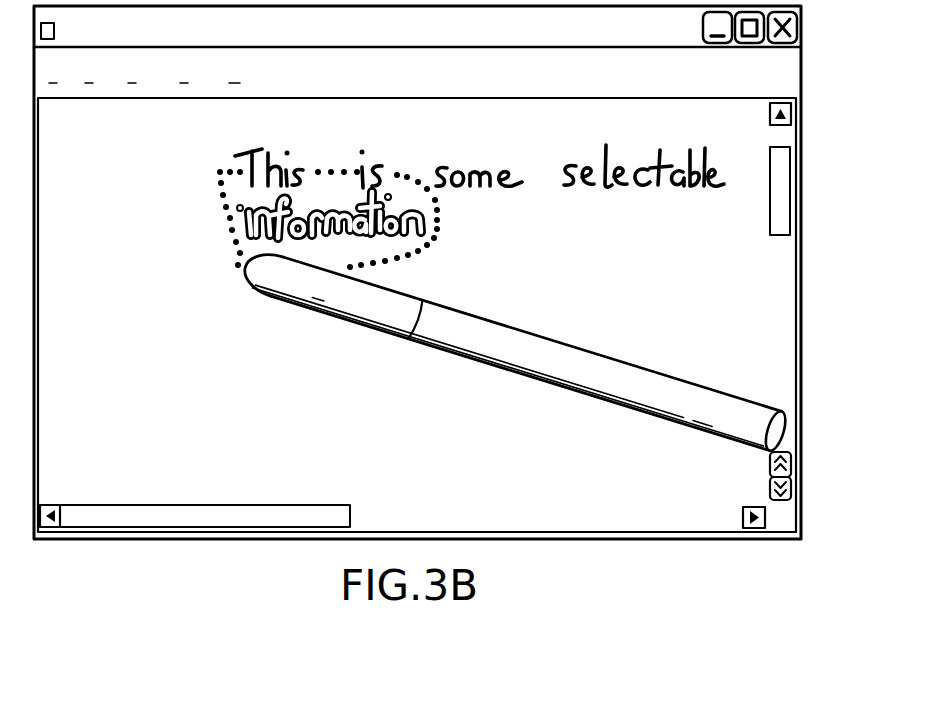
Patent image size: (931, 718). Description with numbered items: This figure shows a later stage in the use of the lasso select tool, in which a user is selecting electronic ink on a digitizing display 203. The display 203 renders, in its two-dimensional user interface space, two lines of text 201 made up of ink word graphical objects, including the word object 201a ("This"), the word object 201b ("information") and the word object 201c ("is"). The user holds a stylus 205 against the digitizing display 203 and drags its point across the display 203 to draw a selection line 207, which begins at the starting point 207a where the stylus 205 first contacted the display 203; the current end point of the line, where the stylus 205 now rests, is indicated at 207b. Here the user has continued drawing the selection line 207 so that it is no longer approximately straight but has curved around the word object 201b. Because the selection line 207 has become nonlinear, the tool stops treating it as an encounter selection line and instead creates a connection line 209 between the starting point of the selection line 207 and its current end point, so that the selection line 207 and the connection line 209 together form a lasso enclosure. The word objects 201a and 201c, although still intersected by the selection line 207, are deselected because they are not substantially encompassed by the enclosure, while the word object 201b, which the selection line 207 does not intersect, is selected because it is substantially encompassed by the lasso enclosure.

The text 201 is at (690, 163).
The word object 201a is at (245, 152).
The word object 201b is at (258, 242).
The word object 201c is at (385, 162).
The digitizing display 203 is at (772, 337).
The stylus 205 is at (605, 352).
The selection line 207 is at (415, 254).
The starting point 207a is at (217, 172).
The selection outline portion near stylus 207b is at (239, 267).
The connection line 209 is at (224, 207).